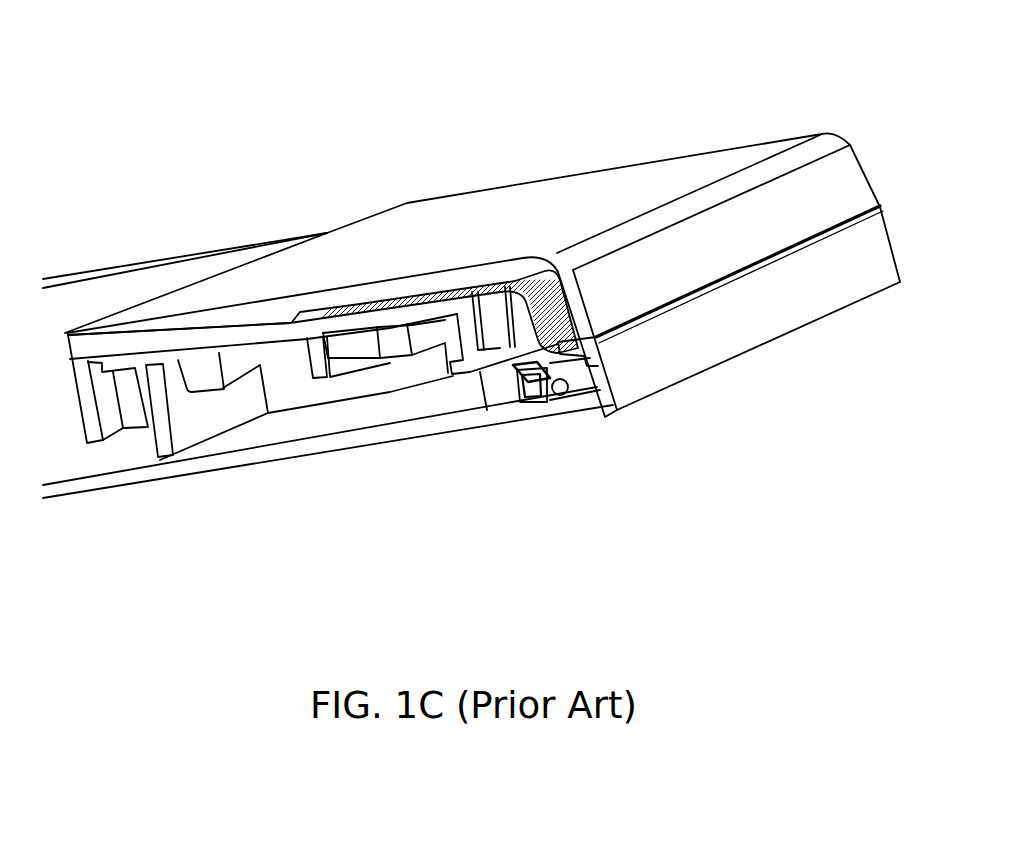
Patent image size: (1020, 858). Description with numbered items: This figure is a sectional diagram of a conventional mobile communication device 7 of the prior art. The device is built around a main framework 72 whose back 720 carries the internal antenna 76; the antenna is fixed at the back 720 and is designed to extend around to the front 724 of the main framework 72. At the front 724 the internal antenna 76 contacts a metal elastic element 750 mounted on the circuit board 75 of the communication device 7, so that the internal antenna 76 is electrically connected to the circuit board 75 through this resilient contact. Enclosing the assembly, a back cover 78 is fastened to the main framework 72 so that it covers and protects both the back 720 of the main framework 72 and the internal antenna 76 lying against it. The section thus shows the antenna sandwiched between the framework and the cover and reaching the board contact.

The mobile communication device 7 is at (322, 126).
The main framework 72 is at (480, 357).
The back 720 is at (258, 325).
The front 724 is at (527, 367).
The circuit board 75 is at (273, 455).
The metal elastic element 750 is at (573, 383).
The internal antenna 76 is at (537, 297).
The back cover 78 is at (513, 245).